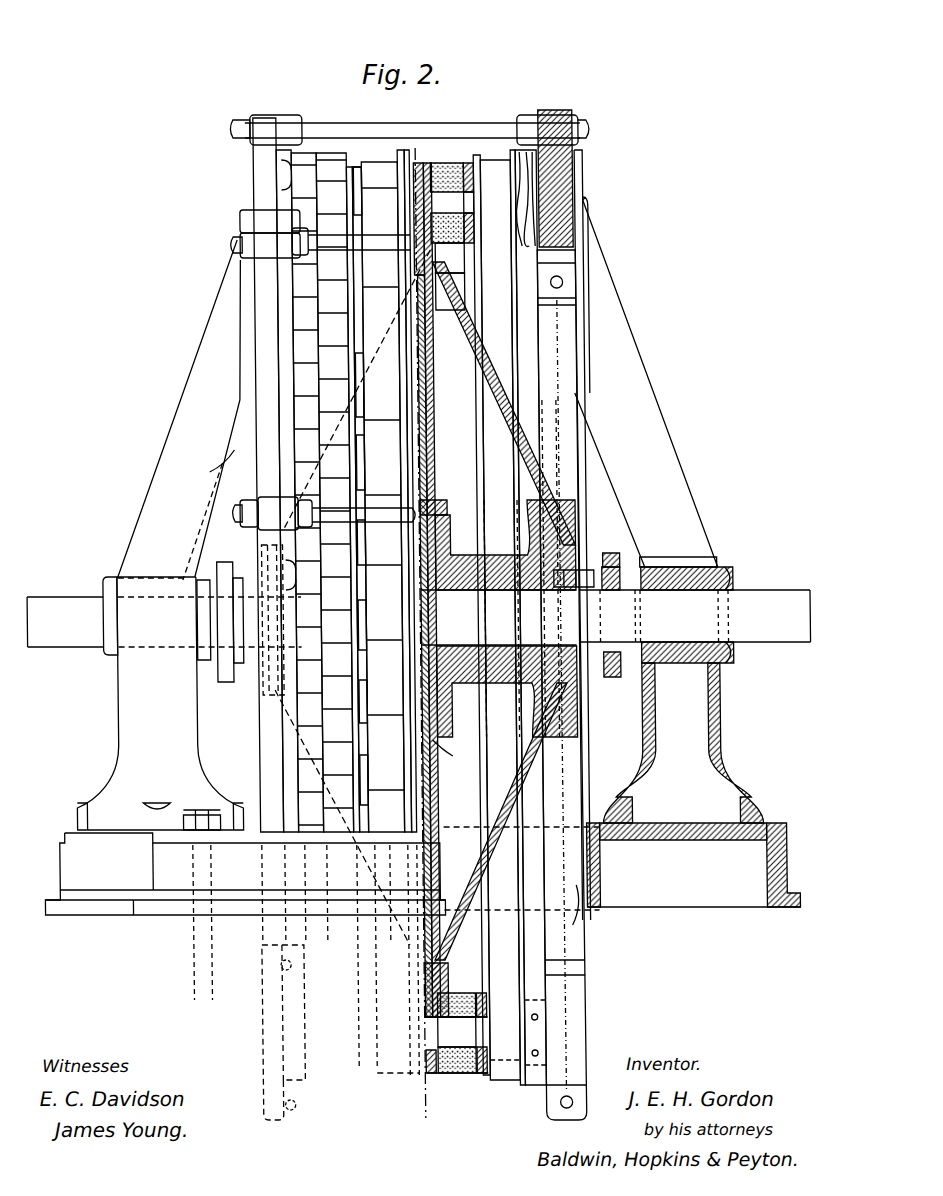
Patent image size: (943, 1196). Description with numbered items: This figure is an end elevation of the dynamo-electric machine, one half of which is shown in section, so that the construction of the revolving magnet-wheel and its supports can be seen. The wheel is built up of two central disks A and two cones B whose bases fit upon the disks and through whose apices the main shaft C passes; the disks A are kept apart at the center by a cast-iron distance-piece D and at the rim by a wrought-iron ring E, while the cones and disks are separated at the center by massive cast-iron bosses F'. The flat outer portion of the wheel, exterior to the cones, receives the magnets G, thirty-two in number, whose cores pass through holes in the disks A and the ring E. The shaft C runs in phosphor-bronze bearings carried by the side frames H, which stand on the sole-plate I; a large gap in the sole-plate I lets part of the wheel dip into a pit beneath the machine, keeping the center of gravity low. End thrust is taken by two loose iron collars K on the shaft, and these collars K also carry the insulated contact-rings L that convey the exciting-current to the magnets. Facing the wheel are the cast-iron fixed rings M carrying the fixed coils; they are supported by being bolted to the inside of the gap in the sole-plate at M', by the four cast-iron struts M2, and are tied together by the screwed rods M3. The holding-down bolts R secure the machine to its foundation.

The central disks A is at (433, 590).
The cones B is at (503, 611).
The main shaft C is at (419, 618).
The distance-piece D is at (450, 753).
The wrought-iron ring E is at (442, 1090).
The hub flange F' is at (498, 568).
The magnets G is at (457, 608).
The side frames H is at (438, 737).
The sole-plate I is at (245, 874).
The loose iron collars K is at (431, 625).
The contact-rings L is at (408, 609).
The fixed rings M is at (556, 178).
The bolting points of fixed rings to sole-plate M' is at (522, 876).
The cast-iron struts M2 is at (416, 388).
The screwed rods M3 is at (409, 128).
The holding-down bolts R is at (201, 813).